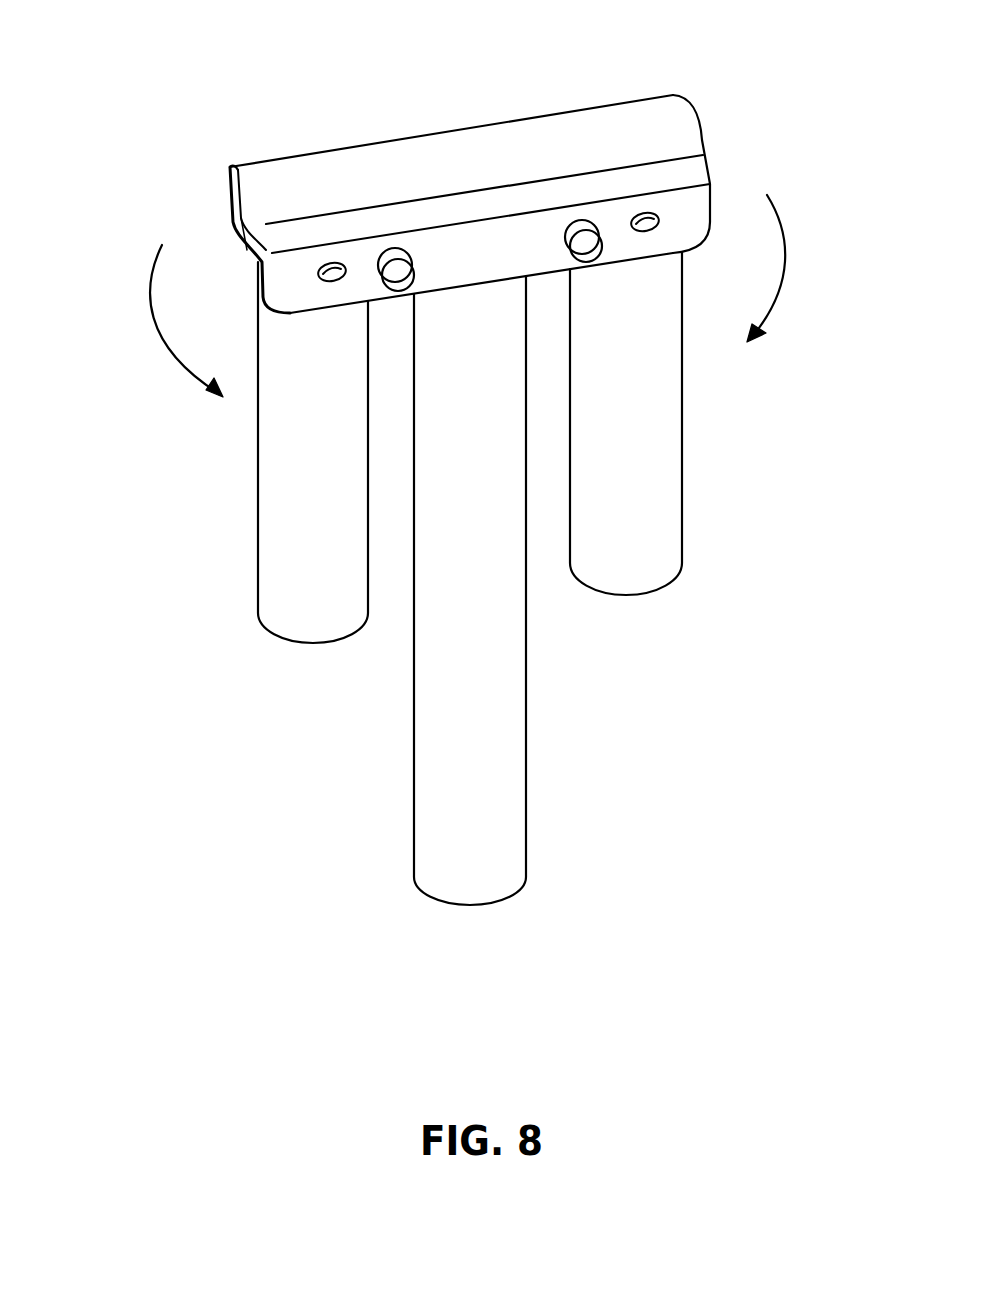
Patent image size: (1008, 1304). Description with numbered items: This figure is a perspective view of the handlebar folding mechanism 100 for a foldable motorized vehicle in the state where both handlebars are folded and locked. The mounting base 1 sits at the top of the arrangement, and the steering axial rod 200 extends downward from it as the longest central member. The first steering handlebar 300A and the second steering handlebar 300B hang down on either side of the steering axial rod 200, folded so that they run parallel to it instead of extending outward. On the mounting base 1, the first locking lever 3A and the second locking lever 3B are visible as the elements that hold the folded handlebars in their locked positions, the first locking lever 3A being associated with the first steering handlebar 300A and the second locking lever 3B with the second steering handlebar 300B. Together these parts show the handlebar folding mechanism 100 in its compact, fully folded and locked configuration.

The handlebar folding mechanism 100 is at (108, 42).
The mounting base 1 is at (452, 145).
The first locking lever 3A is at (397, 273).
The second locking lever 3B is at (587, 243).
The first steering handlebar 300A is at (287, 453).
The second steering handlebar 300B is at (647, 450).
The steering axial rod 200 is at (492, 795).